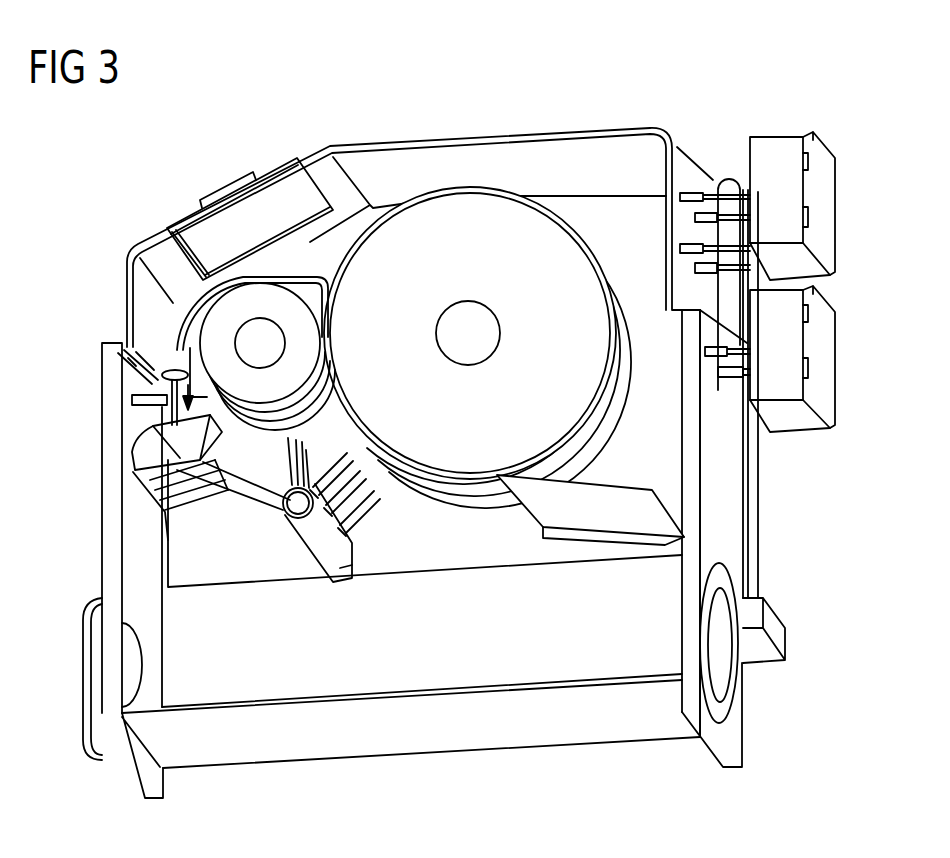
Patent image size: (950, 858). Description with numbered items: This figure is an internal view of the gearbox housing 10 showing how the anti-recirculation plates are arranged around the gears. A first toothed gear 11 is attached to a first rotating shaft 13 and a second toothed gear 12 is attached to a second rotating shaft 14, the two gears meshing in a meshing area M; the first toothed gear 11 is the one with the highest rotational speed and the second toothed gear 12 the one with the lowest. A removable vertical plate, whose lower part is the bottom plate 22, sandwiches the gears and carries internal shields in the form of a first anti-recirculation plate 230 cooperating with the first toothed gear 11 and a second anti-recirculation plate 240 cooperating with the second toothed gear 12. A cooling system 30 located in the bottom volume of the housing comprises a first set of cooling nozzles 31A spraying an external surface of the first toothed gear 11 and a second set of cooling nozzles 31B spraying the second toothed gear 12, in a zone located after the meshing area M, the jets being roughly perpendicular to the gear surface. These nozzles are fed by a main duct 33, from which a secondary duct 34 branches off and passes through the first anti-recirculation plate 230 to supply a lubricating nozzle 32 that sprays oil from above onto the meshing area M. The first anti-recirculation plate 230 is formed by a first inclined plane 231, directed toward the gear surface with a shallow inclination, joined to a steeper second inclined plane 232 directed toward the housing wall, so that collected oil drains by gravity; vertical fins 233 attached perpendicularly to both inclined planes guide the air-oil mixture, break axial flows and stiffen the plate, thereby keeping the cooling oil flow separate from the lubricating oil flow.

The gearbox housing 10 is at (444, 152).
The first toothed gear 11 is at (215, 326).
The second toothed gear 12 is at (560, 242).
The first rotating shaft 13 is at (265, 343).
The second rotating shaft 14 is at (466, 320).
The bottom plate 22 is at (205, 582).
The cooling system 30 is at (312, 592).
The first set of cooling nozzles 31A is at (302, 437).
The second set of cooling nozzles 31B is at (365, 510).
The lubricating nozzle 32 is at (312, 277).
The main duct 33 is at (338, 580).
The secondary duct 34 is at (176, 346).
The first anti-recirculation plate 230 is at (118, 447).
The first inclined plane 231 is at (187, 387).
The second inclined plane 232 is at (185, 485).
The vertical fins 233 is at (152, 474).
The second anti-recirculation plate 240 is at (597, 522).
The meshing area M is at (355, 320).